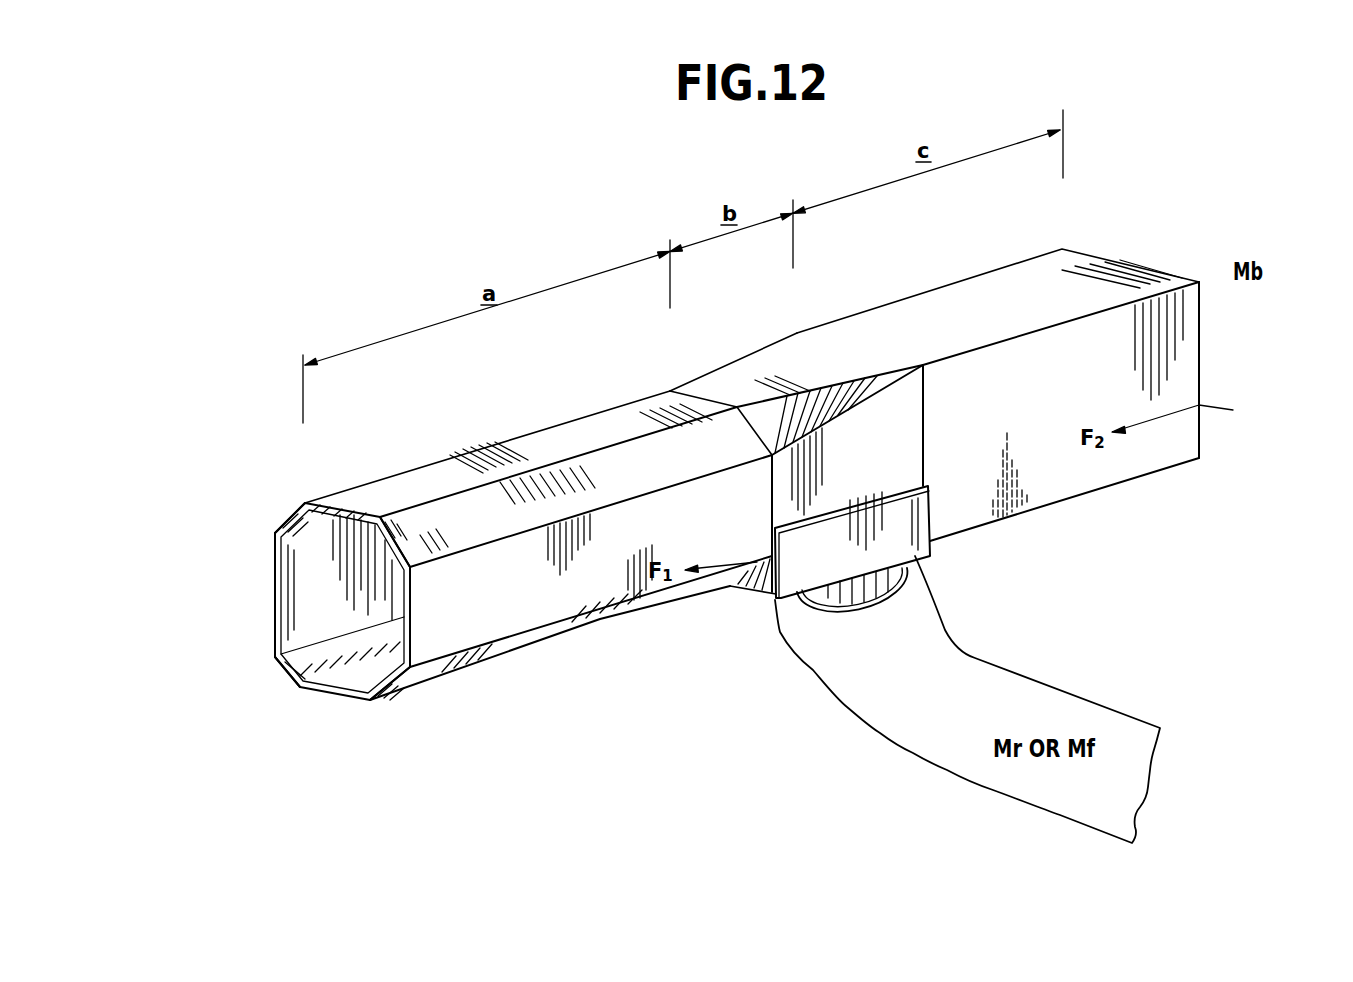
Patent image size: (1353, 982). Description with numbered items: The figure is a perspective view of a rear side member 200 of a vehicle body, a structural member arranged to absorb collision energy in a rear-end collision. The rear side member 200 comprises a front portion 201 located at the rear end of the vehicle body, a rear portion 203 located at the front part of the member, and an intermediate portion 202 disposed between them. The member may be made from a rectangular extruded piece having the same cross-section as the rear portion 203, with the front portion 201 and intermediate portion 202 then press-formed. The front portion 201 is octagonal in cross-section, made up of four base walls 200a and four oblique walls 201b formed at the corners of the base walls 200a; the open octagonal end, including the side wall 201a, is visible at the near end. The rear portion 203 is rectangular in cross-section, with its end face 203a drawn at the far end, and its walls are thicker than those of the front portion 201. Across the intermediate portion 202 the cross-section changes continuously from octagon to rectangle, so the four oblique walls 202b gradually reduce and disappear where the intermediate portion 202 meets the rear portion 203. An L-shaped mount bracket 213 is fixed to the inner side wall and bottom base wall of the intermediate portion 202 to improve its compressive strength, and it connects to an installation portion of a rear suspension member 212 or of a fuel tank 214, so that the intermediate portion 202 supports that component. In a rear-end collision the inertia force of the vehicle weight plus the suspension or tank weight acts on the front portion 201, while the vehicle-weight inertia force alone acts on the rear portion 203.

The rear side member 200 is at (736, 519).
The base walls 200a is at (581, 432).
The front portion 201 is at (468, 559).
The side wall of tube portion 201a is at (275, 594).
The oblique walls 201b is at (293, 521).
The intermediate portion 202 is at (764, 487).
The oblique walls of the intermediate portion 202b is at (730, 640).
The rear portion 203 is at (1052, 387).
The end face of block portion 203a is at (1200, 363).
The rear suspension member 212 is at (971, 699).
The mount bracket 213 is at (928, 547).
The fuel tank 214 is at (984, 648).